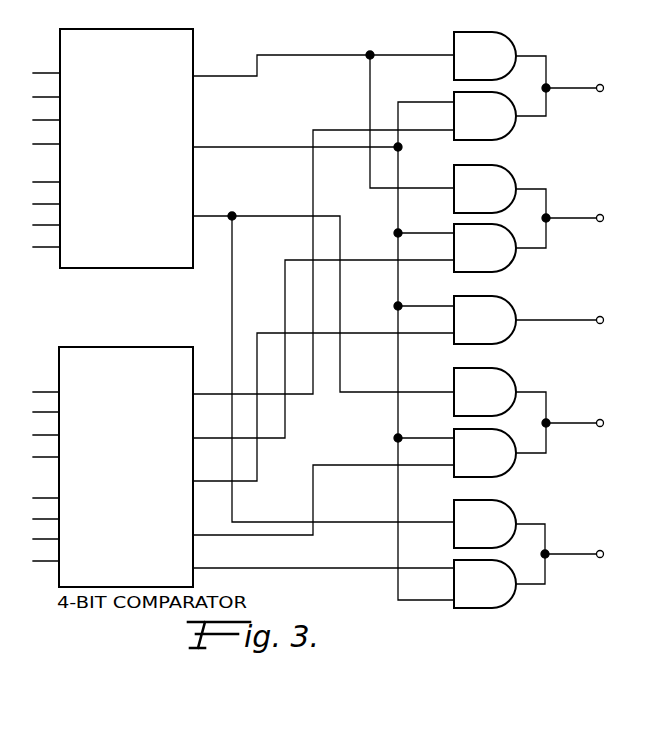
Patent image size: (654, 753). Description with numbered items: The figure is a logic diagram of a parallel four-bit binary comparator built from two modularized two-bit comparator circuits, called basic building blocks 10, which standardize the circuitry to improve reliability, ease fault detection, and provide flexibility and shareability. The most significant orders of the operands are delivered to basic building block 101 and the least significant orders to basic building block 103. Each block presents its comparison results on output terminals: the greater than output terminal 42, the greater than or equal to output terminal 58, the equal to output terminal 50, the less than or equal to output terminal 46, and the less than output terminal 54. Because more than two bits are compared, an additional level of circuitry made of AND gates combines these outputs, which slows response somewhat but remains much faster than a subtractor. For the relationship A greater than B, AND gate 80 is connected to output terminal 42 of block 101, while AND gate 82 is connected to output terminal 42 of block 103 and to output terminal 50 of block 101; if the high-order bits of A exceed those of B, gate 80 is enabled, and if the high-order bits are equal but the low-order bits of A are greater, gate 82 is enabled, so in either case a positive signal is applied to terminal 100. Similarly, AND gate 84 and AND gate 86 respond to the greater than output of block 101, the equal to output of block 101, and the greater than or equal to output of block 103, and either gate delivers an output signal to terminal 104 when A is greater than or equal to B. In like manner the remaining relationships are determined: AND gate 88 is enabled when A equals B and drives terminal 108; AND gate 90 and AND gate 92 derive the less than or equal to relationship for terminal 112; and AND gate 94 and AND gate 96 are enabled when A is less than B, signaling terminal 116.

The basic building block 10 is at (113, 307).
The basic building block 101 is at (113, 148).
The basic building block 103 is at (113, 467).
The output terminal 42 is at (323, 222).
The output terminal 58 is at (323, 263).
The output terminal 50 is at (323, 351).
The output terminal 46 is at (323, 349).
The output terminal 54 is at (323, 381).
The AND gate 80 is at (472, 66).
The AND gate 82 is at (472, 126).
The AND gate 84 is at (472, 199).
The AND gate 86 is at (472, 258).
The AND gate 88 is at (472, 330).
The AND gate 90 is at (472, 402).
The AND gate 92 is at (472, 463).
The AND gate 94 is at (472, 534).
The AND gate 96 is at (472, 594).
The terminal 100 is at (597, 84).
The terminal 104 is at (597, 214).
The terminal 108 is at (597, 316).
The terminal 112 is at (597, 419).
The terminal 116 is at (597, 550).